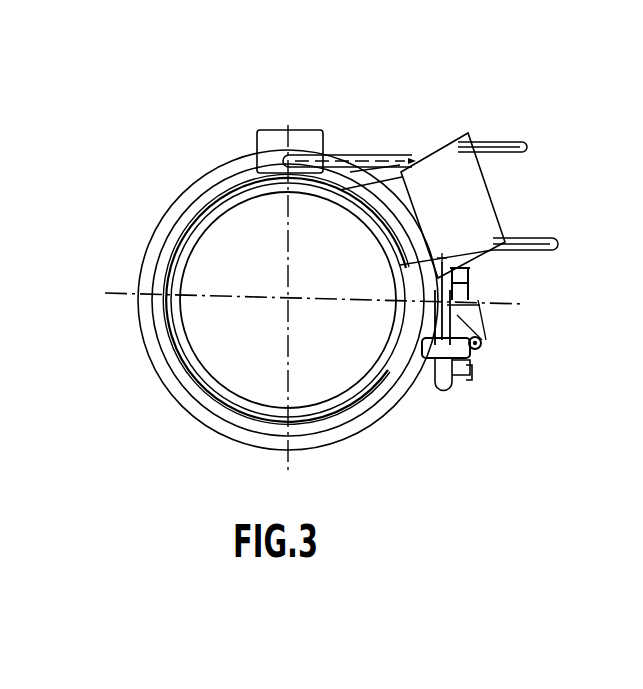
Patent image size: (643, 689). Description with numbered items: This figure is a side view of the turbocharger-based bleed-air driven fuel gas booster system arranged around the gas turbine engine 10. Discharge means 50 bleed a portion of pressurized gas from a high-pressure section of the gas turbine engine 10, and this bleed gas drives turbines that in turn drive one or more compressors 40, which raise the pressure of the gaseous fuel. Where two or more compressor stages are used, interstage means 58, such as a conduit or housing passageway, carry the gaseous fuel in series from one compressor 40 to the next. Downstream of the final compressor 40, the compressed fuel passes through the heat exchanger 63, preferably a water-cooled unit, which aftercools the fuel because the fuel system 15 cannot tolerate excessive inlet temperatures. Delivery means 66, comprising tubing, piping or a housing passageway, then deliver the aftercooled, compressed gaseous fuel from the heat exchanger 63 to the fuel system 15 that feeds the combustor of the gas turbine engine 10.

The gas turbine engine 10 is at (175, 137).
The fuel system 15 is at (306, 136).
The delivery means 66 is at (365, 148).
The heat exchanger 63 is at (467, 197).
The compressor 40 is at (483, 308).
The discharge means 50 is at (410, 331).
The interstage means 58 is at (429, 372).